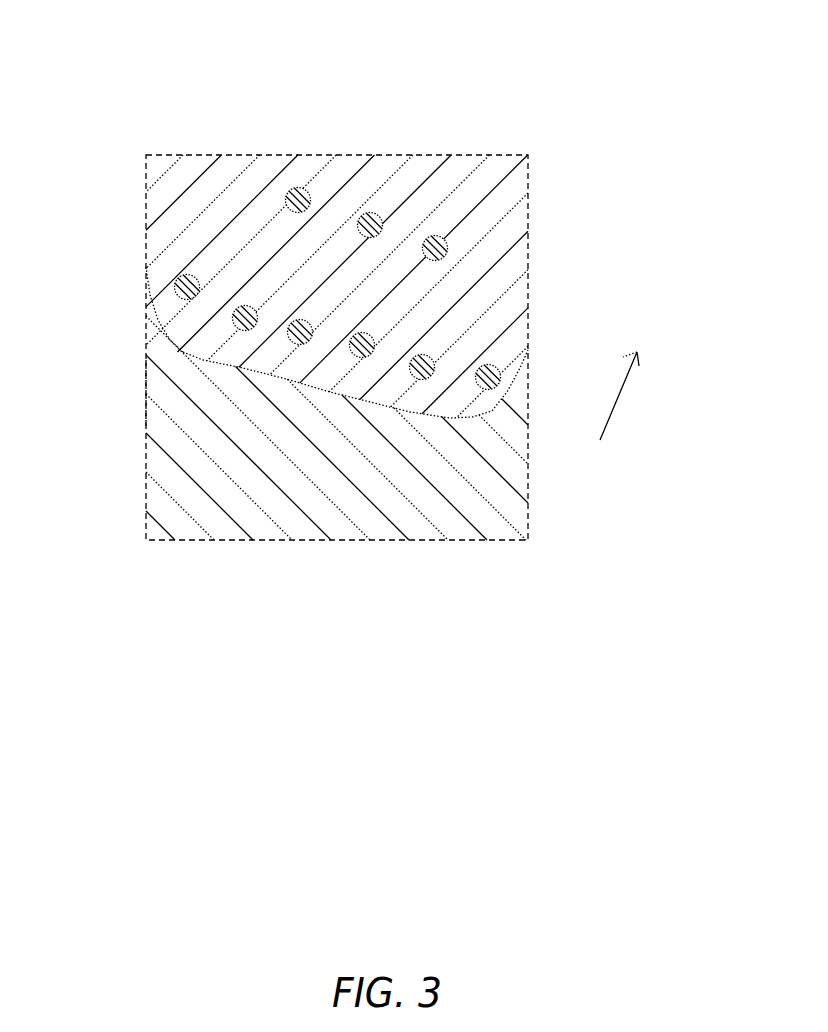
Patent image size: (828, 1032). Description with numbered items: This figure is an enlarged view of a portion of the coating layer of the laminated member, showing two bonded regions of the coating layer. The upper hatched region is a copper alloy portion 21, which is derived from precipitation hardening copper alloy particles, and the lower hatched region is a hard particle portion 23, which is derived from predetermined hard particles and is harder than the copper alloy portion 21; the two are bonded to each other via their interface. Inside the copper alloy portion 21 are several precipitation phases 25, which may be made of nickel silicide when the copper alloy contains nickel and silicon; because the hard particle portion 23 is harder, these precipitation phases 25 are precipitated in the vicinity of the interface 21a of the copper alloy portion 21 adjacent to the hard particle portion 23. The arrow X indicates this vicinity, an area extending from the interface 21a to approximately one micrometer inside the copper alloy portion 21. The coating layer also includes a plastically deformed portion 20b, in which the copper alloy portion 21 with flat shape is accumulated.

The copper alloy portion 21 is at (518, 298).
The hard particle portion 23 is at (518, 490).
The precipitation phase 25 is at (378, 212).
The plastically deformed portion 20b is at (180, 330).
The interface 21a is at (147, 395).
The arrow X is at (623, 395).